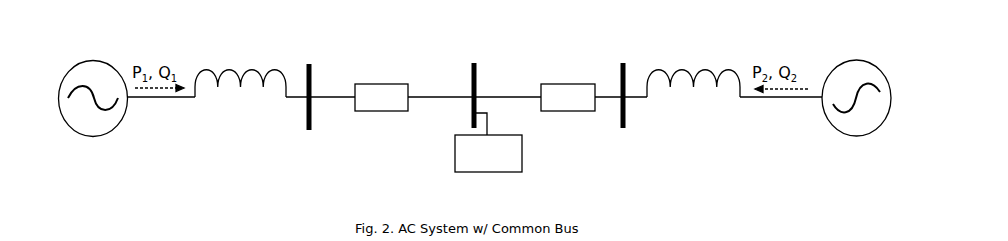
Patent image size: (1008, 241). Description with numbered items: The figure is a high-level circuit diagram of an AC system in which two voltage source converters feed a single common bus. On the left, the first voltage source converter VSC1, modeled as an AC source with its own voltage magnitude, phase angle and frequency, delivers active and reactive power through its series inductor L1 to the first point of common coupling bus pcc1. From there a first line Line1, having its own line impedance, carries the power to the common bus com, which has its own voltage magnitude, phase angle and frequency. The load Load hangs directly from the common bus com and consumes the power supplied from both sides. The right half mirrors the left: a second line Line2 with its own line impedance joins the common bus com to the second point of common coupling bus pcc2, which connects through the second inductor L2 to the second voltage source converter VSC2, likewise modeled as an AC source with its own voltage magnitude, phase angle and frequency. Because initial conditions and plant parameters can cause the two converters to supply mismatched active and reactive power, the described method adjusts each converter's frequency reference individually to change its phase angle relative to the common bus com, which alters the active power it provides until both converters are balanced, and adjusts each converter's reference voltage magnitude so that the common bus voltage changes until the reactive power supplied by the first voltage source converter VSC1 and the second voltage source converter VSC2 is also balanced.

The voltage source converter VSC1 is at (93, 107).
The inductor L1 is at (240, 85).
The point of common coupling bus pcc1 is at (318, 68).
The line Line1 is at (381, 109).
The common bus com is at (468, 68).
The load Load is at (488, 142).
The line Line2 is at (568, 109).
The point of common coupling bus pcc2 is at (632, 68).
The inductor L2 is at (693, 85).
The voltage source converter VSC2 is at (850, 107).